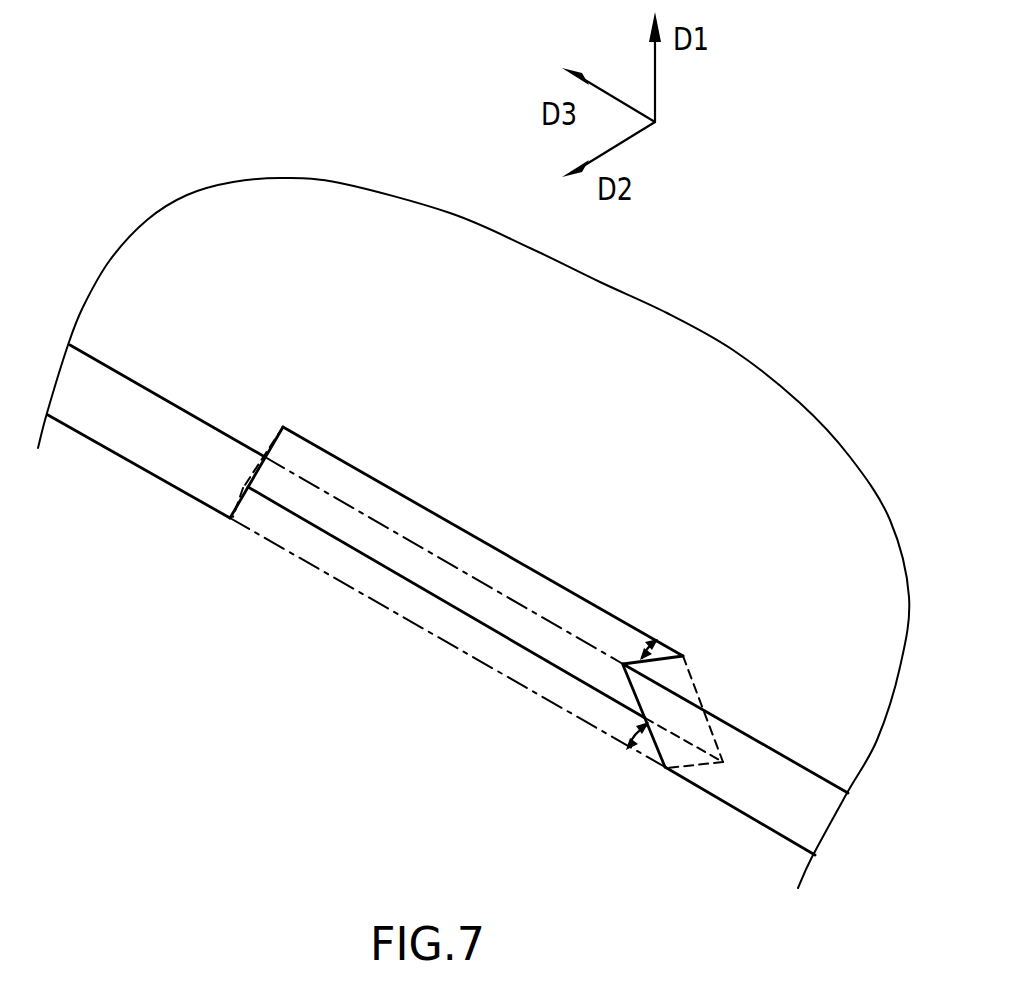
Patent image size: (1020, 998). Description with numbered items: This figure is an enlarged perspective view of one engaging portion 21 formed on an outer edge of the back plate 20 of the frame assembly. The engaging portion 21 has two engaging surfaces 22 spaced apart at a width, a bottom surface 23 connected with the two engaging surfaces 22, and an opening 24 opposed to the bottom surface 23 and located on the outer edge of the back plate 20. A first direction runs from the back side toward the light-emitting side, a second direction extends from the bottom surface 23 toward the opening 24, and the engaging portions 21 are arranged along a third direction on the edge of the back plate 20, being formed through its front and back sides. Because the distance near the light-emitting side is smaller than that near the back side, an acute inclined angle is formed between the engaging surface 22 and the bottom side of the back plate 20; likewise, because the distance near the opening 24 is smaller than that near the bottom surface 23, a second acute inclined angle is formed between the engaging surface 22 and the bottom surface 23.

The back plate 20 is at (140, 478).
The engaging portion 21 is at (400, 515).
The engaging surface 22 is at (243, 488).
The bottom surface 23 is at (530, 592).
The opening 24 is at (427, 616).